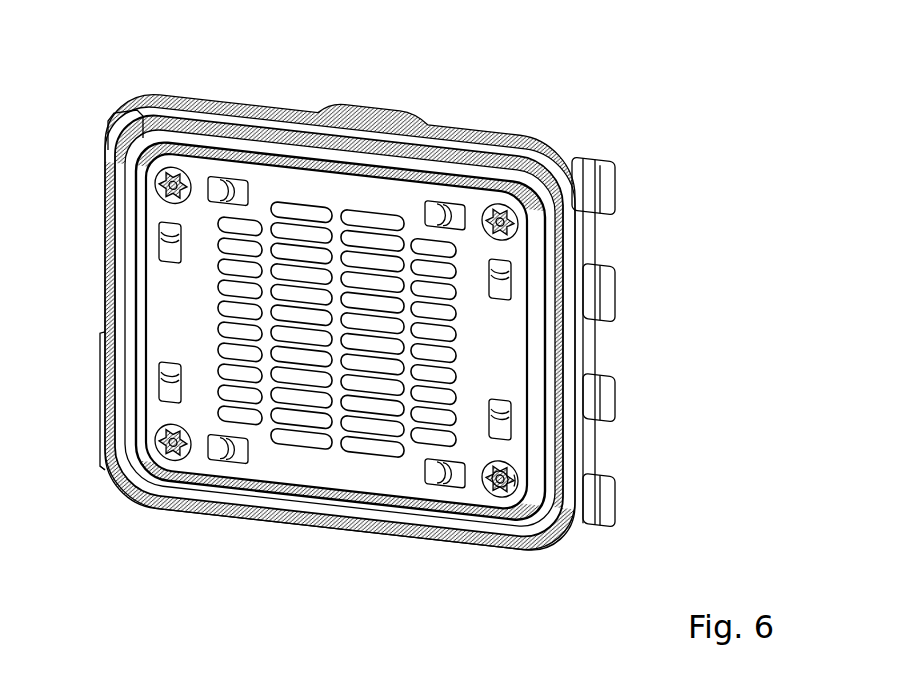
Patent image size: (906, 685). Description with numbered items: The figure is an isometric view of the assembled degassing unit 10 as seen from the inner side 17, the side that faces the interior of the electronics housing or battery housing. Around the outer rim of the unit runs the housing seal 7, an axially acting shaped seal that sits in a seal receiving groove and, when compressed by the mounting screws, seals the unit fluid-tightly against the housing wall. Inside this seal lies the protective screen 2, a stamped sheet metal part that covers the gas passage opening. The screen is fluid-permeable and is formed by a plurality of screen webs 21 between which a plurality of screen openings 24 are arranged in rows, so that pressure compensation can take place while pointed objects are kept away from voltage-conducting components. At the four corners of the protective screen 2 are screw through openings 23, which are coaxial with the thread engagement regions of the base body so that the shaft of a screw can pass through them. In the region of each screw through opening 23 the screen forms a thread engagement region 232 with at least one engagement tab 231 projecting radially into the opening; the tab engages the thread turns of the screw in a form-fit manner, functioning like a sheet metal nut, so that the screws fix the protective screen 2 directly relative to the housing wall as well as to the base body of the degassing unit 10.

The degassing unit 10 is at (113, 75).
The housing seal 7 is at (185, 128).
The protective screen 2 is at (413, 188).
The screen openings 24 is at (318, 403).
The screen webs 21 is at (378, 422).
The screw through openings 23 is at (163, 397).
The engagement tab 231 is at (493, 493).
The thread engagement region 232 is at (522, 473).
The inner side 17 is at (169, 540).